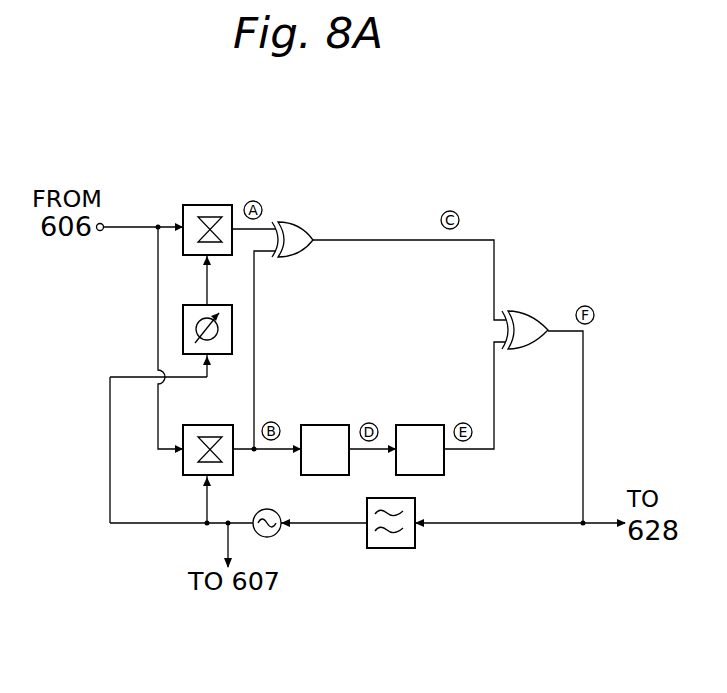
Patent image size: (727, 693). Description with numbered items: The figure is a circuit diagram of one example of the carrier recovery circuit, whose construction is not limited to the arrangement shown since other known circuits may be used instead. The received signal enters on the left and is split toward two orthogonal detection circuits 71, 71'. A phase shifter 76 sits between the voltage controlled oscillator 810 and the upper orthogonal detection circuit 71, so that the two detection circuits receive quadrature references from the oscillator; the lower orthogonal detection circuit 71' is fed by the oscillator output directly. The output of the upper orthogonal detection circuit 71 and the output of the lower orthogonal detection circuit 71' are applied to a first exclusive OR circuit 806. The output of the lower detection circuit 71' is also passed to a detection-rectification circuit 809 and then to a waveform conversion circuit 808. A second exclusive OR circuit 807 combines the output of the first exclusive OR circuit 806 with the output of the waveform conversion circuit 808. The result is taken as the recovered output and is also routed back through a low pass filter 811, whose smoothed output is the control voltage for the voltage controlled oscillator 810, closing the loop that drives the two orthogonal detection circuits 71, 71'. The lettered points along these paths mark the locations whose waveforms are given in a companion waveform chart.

The orthogonal detection circuit 71 is at (207, 207).
The orthogonal detection circuit 71' is at (208, 430).
The phase shifter 76 is at (224, 305).
The exclusive OR circuit 806 is at (311, 230).
The exclusive OR circuit 807 is at (537, 313).
The waveform conversion circuit 808 is at (425, 413).
The detection-rectification circuit 809 is at (327, 413).
The voltage controlled oscillator 810 is at (272, 509).
The low pass filter 811 is at (390, 548).